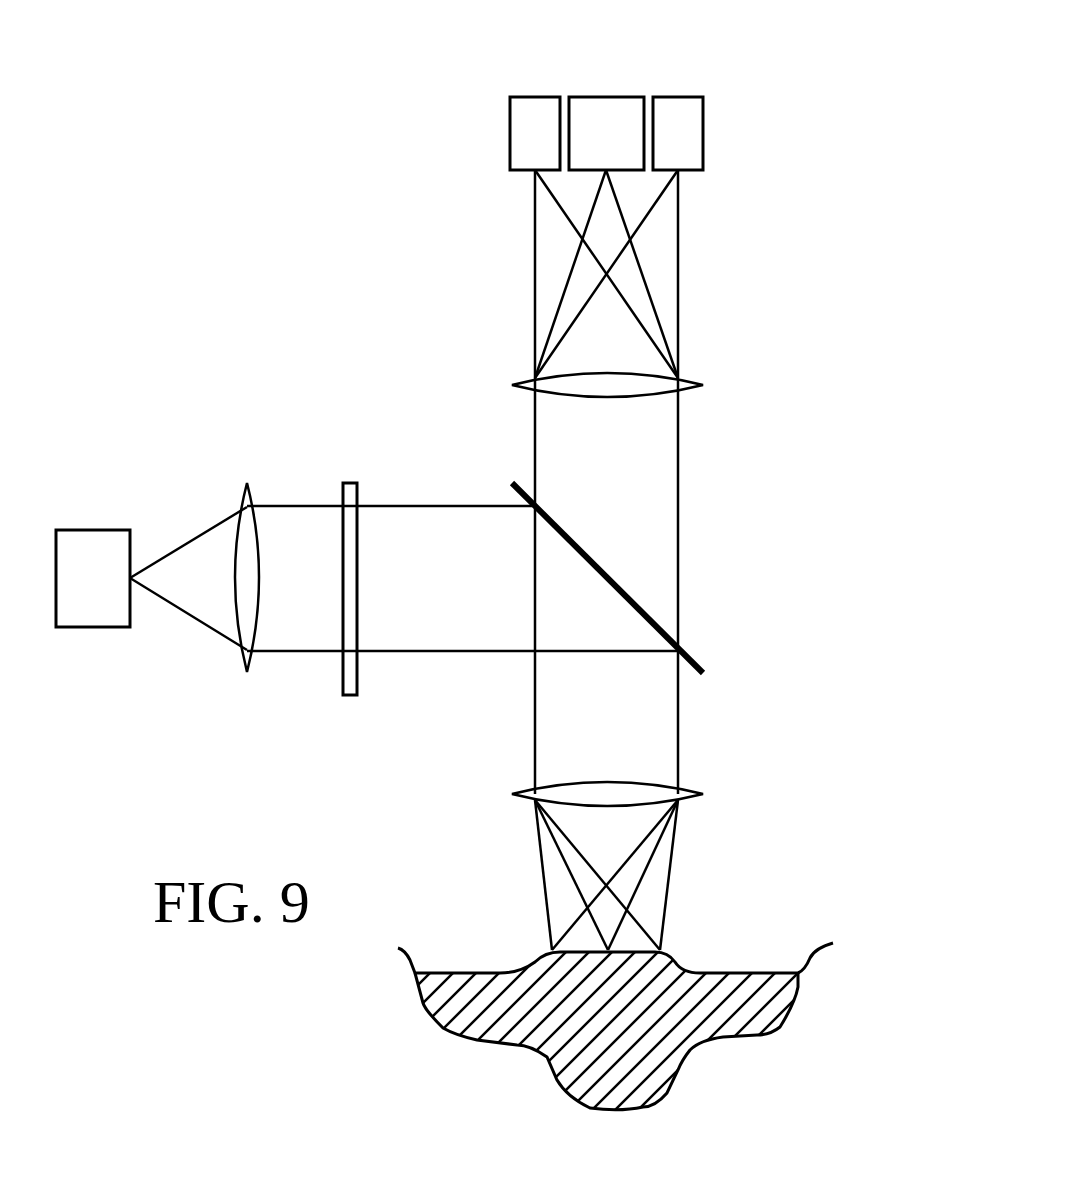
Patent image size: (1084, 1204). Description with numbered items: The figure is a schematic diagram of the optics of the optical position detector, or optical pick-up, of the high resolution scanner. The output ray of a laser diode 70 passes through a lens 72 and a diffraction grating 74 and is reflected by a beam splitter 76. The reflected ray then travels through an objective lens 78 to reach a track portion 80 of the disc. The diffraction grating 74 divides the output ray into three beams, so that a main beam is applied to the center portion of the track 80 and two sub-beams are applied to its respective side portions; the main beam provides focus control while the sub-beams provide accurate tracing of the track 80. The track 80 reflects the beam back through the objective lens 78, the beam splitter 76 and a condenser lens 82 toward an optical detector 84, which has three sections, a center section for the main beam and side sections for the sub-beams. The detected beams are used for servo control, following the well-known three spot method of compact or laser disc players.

The laser diode 70 is at (107, 529).
The lens 72 is at (240, 650).
The diffraction grating 74 is at (357, 668).
The beam splitter 76 is at (693, 662).
The objective lens 78 is at (687, 785).
The track portion 80 is at (735, 895).
The condenser lens 82 is at (693, 383).
The optical detector 84 is at (636, 70).